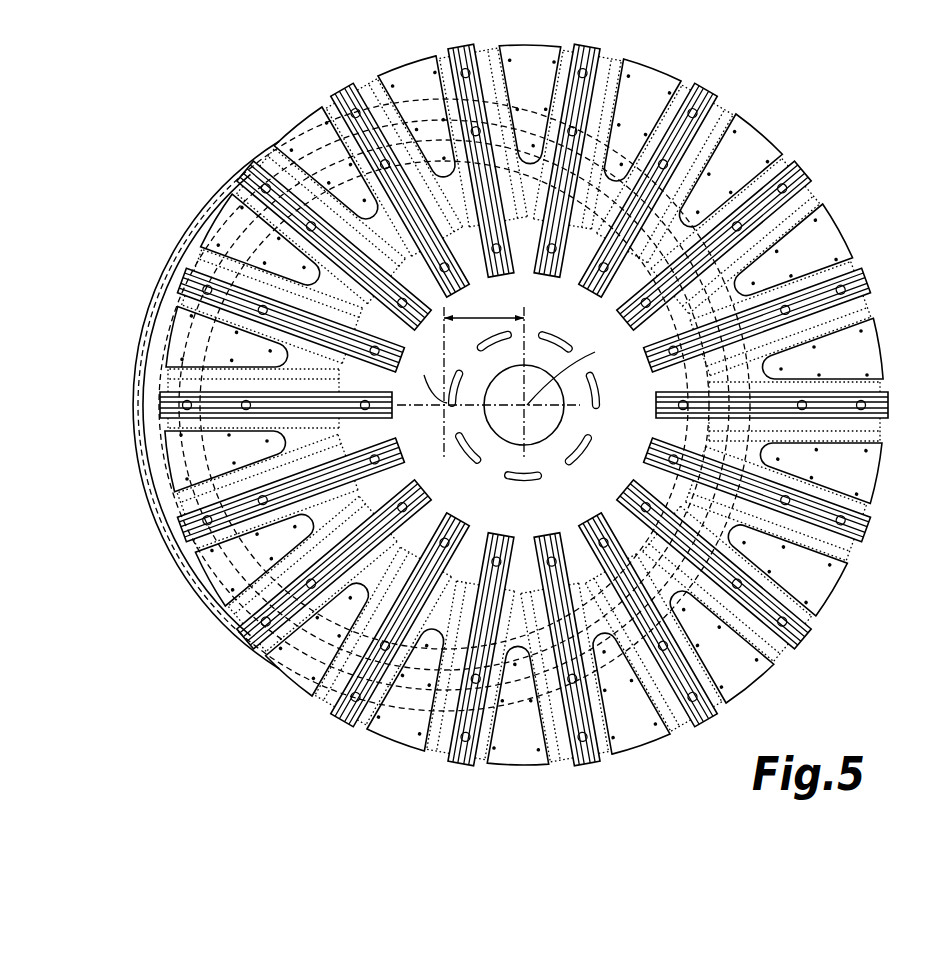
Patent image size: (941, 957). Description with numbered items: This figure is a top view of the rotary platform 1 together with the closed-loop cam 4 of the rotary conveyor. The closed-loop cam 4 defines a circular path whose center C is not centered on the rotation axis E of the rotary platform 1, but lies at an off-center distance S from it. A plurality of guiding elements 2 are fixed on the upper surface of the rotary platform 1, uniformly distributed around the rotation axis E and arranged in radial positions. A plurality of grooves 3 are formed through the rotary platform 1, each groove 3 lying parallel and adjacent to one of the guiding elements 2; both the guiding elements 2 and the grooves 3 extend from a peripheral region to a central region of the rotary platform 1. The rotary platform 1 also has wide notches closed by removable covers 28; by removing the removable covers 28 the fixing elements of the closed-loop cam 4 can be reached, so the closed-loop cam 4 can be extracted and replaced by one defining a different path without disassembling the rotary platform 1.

The rotary platform 1 is at (580, 503).
The guiding element 2 is at (843, 390).
The groove 3 is at (830, 432).
The closed-loop cam 4 is at (162, 377).
The removable cover 28 is at (825, 585).